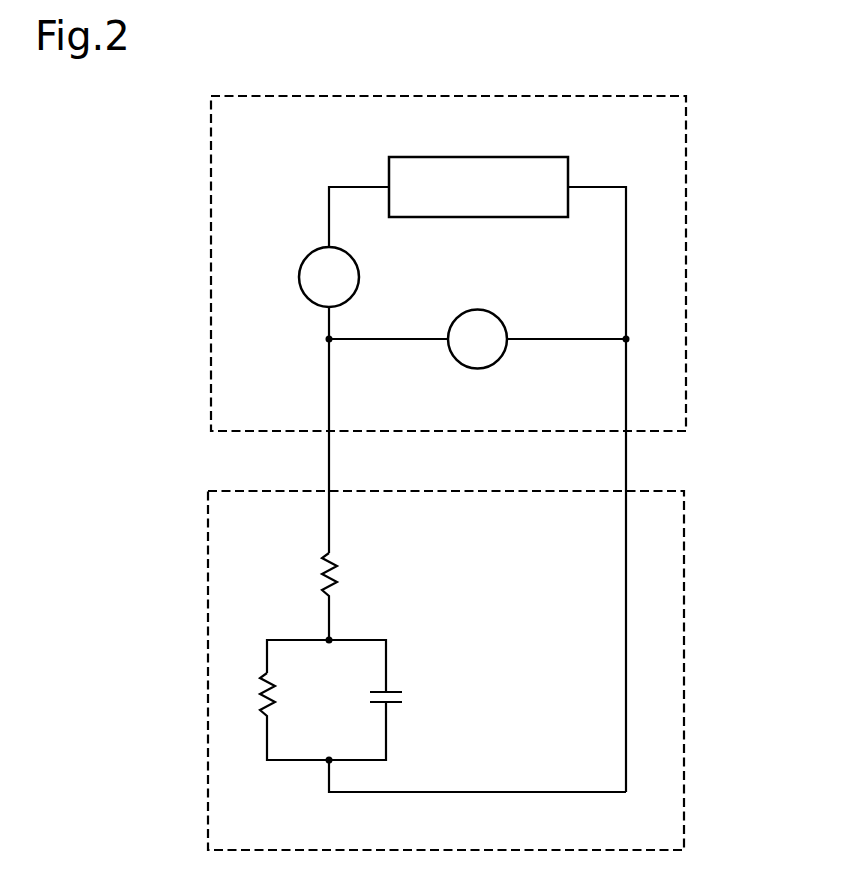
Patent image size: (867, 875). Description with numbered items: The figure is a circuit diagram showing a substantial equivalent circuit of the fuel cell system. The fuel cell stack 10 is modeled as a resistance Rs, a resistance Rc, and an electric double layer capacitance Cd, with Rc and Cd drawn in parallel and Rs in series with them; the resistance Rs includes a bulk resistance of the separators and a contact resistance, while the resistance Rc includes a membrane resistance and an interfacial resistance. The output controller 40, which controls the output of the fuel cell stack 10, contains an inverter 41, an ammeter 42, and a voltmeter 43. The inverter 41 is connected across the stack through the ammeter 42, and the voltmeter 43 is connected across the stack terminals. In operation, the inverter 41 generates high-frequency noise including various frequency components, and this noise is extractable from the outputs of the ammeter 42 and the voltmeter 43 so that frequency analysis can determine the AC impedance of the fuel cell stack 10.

The fuel cell stack 10 is at (684, 580).
The output controller 40 is at (686, 188).
The inverter 41 is at (568, 171).
The ammeter 42 is at (360, 276).
The voltmeter 43 is at (481, 310).